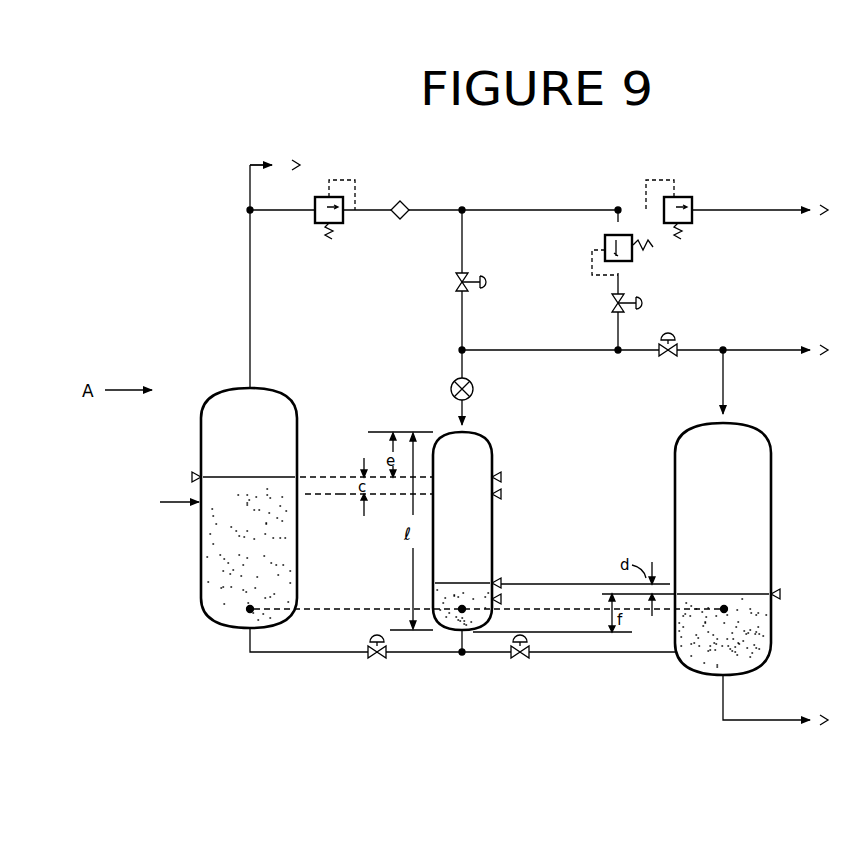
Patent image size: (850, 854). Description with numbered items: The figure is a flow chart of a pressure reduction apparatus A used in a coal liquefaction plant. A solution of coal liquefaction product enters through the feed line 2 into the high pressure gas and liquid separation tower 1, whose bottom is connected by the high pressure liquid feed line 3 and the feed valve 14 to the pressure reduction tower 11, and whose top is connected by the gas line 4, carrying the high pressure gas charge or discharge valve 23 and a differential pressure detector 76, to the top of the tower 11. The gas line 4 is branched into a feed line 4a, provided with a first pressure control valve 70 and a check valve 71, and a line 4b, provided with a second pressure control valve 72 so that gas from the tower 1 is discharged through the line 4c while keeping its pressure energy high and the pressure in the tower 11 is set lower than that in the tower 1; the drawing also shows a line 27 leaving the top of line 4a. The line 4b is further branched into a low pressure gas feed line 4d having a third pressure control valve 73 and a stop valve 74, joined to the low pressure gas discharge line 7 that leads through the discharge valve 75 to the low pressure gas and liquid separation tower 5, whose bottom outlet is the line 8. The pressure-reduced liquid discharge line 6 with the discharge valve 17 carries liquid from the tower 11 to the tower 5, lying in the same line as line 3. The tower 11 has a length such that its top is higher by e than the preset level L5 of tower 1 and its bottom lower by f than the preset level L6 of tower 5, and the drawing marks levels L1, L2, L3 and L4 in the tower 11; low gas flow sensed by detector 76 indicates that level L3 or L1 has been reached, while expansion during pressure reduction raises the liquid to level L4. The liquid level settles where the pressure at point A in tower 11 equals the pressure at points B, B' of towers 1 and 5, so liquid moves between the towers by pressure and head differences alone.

The high pressure gas and liquid separation tower 1 is at (299, 416).
The feed line 2 is at (175, 504).
The high pressure liquid feed line 3 is at (330, 655).
The gas line 4 is at (459, 252).
The feed line 4a is at (374, 212).
The line 4b is at (576, 208).
The line 4c is at (767, 208).
The low pressure gas feed line 4d is at (615, 222).
The low pressure gas and liquid separation tower 5 is at (773, 444).
The pressure-reduced liquid discharge line 6 is at (607, 655).
The low pressure gas discharge line 7 is at (576, 352).
The outlet line 8 is at (768, 722).
The pressure reduction tower 11 is at (494, 448).
The feed valve 14 is at (385, 656).
The pressure-reduced liquid discharge valve 17 is at (516, 658).
The high pressure gas charge or discharge valve 23 is at (470, 290).
The outlet line 27 is at (262, 163).
The first pressure control valve 70 is at (322, 226).
The check valve 71 is at (405, 205).
The second pressure control valve 72 is at (696, 217).
The third pressure control valve 73 is at (635, 259).
The stop valve 74 is at (612, 303).
The discharge valve 75 is at (676, 345).
The differential pressure detector 76 is at (473, 392).
The liquid level L1 is at (501, 583).
The liquid level L2 is at (501, 599).
The liquid level L3 is at (501, 494).
The liquid level L4 is at (501, 477).
The preset liquid level L5 is at (183, 478).
The preset liquid level L6 is at (787, 595).
The pressure reduction apparatus A is at (466, 611).
The point B is at (275, 628).
The point B' is at (762, 632).